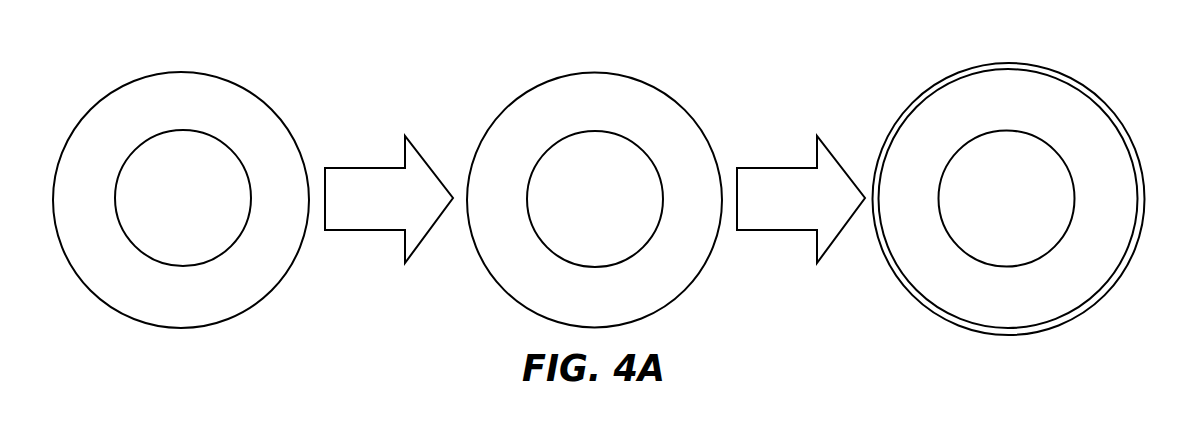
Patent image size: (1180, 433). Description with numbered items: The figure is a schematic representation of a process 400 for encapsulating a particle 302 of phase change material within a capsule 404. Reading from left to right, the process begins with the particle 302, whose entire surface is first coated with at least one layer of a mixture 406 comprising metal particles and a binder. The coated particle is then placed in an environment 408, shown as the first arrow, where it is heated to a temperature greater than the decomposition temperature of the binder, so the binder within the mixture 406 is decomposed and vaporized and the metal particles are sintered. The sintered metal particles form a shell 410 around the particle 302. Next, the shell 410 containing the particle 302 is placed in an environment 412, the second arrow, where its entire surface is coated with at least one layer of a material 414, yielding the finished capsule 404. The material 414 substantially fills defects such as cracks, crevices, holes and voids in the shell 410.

The particle 302 is at (209, 203).
The process 400 is at (453, 287).
The capsule 404 is at (868, 252).
The mixture 406 is at (196, 108).
The environment 408 is at (408, 209).
The shell 410 is at (607, 112).
The environment 412 is at (818, 210).
The material 414 is at (955, 78).